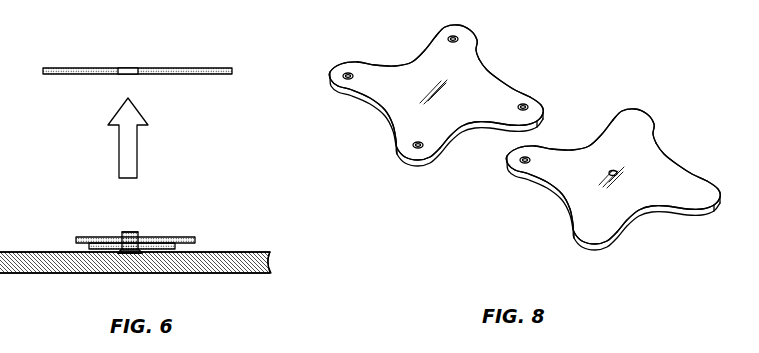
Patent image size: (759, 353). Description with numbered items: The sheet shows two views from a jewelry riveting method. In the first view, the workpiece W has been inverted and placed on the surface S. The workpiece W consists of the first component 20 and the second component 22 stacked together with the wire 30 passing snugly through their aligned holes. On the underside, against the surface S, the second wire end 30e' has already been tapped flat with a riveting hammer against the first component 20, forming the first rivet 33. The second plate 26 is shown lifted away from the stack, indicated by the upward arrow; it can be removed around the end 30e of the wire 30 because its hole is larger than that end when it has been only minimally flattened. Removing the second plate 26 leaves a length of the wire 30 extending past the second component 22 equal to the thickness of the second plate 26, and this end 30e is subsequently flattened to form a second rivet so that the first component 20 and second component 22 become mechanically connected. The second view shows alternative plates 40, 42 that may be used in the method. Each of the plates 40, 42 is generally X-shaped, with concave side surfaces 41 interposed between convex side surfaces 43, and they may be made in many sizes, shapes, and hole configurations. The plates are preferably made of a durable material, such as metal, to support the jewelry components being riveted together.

In FIG. 6, the first component 20 is at (78, 241).
In FIG. 6, the second component 22 is at (83, 237).
In FIG. 6, the second plate 26 is at (43, 70).
In FIG. 6, the wire 30 is at (142, 242).
In FIG. 6, the wire end 30e is at (121, 210).
In FIG. 6, the second wire end 30e' is at (148, 274).
In FIG. 6, the first rivet 33 is at (119, 254).
In FIG. 8, the plate 40 is at (410, 70).
In FIG. 8, the concave side surfaces 41 is at (487, 75).
In FIG. 8, the plate 42 is at (633, 122).
In FIG. 8, the convex side surfaces 43 is at (333, 88).
In FIG. 6, the surface S is at (267, 250).
In FIG. 6, the workpiece W is at (65, 200).